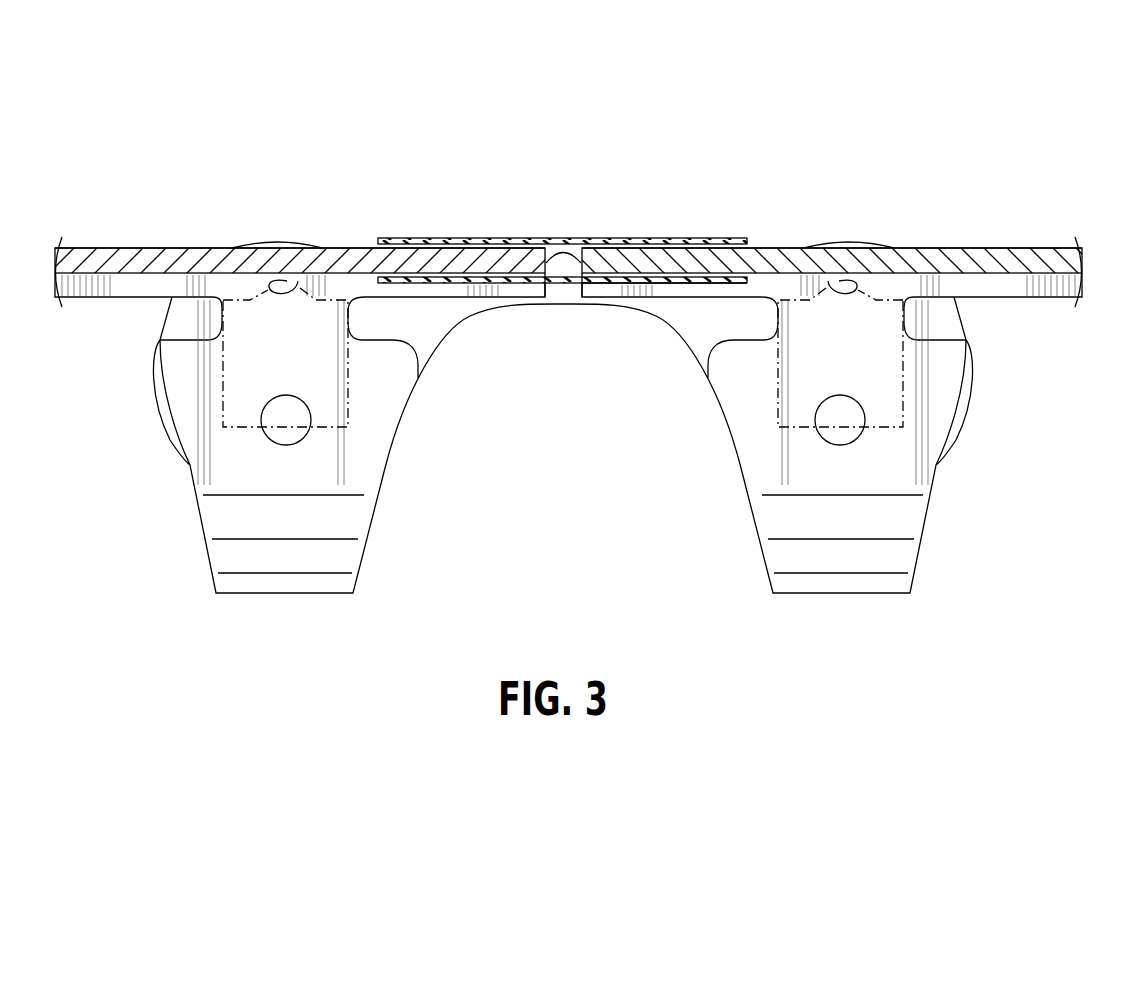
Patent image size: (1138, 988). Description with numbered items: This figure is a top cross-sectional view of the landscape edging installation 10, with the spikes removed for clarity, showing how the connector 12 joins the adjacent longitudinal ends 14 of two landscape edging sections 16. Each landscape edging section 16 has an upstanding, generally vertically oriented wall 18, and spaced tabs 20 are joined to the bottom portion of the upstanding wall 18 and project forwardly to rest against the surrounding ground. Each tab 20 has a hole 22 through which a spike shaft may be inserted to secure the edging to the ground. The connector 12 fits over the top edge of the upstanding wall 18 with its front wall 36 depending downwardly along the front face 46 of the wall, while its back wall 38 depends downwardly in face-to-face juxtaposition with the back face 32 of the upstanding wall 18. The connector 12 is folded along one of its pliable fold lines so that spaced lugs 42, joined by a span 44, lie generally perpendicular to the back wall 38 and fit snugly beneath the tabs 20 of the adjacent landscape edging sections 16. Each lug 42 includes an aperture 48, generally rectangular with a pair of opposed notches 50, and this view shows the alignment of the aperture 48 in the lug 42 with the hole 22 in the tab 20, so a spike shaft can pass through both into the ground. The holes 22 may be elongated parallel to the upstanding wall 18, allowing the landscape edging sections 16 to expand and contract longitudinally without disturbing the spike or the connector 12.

The landscape edging installation 10 is at (225, 104).
The connector 12 is at (407, 236).
The longitudinal end 14 is at (563, 252).
The landscape edging section 16 is at (568, 265).
The upstanding wall 18 is at (192, 258).
The tab 20 is at (366, 528).
The hole 22 is at (298, 428).
The back face 32 is at (90, 248).
The front wall 36 is at (620, 284).
The back wall 38 is at (612, 277).
The lug 42 is at (172, 320).
The span 44 is at (555, 300).
The front face 46 is at (80, 275).
The aperture 48 is at (225, 412).
The notch 50 is at (298, 281).